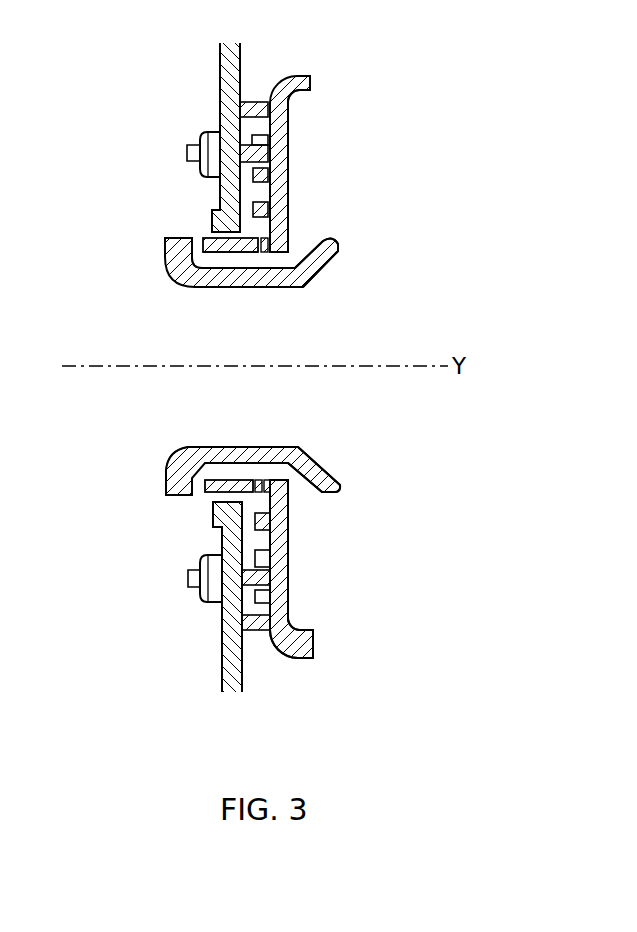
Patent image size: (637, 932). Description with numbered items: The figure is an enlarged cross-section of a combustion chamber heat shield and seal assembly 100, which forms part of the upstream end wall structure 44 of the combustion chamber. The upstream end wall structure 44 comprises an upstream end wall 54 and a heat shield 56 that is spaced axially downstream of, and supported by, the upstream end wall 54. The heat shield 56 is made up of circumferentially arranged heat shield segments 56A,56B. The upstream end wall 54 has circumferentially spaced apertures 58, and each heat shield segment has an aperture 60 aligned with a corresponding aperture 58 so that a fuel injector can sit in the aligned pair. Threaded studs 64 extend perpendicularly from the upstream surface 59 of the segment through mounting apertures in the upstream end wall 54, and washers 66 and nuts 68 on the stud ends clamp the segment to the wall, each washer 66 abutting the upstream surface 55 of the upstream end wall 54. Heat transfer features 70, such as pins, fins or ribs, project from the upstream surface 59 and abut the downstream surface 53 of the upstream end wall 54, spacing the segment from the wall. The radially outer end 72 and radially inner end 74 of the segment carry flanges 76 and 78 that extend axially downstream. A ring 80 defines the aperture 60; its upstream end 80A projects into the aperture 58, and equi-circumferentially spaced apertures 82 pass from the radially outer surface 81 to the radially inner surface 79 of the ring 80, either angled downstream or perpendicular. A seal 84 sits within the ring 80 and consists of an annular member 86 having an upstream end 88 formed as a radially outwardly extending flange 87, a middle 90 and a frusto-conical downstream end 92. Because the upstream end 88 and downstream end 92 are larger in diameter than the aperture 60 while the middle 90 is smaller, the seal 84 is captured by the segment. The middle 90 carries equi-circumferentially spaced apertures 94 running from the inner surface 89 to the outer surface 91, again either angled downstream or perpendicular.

The combustion chamber heat shield and seal assembly 100 is at (400, 270).
The upstream end wall structure 44 is at (148, 668).
The washer 66 is at (218, 130).
The nut 68 is at (200, 137).
The upstream surface of the heat shield segment 59 is at (256, 196).
The radially outer surface of the ring 81 is at (208, 236).
The threaded stud 64 is at (288, 150).
The heat transfer features 70 is at (268, 212).
The radially outer end of the heat shield segment 72 is at (311, 82).
The flange 76 is at (311, 90).
The seal 84 is at (340, 240).
The upstream end of the ring 80A is at (168, 263).
The ring 80 is at (232, 253).
The radially inner surface of the ring 79 is at (222, 255).
The apertures in the middle of the seal 94 is at (222, 256).
The inner surface of the seal 89 is at (262, 287).
The apertures in the ring 82 is at (264, 254).
The upstream end of the seal 88 is at (167, 477).
The annular member 86 is at (258, 446).
The middle of the seal 90 is at (280, 447).
The outer surface of the seal 91 is at (231, 478).
The downstream end of the seal 92 is at (338, 490).
The radially outwardly extending flange 87 is at (180, 496).
The aperture in the heat shield segment 60 is at (283, 471).
The aperture in the upstream end wall 58 is at (216, 498).
The downstream surface of the upstream end wall 53 is at (288, 560).
The heat shield 56 is at (288, 633).
The radially inner end of the heat shield segment 74 is at (313, 650).
The flange 78 is at (297, 648).
The heat shield segments 56A,56B is at (313, 658).
The upstream surface of the upstream end wall 55 is at (223, 640).
The upstream end wall 54 is at (223, 676).